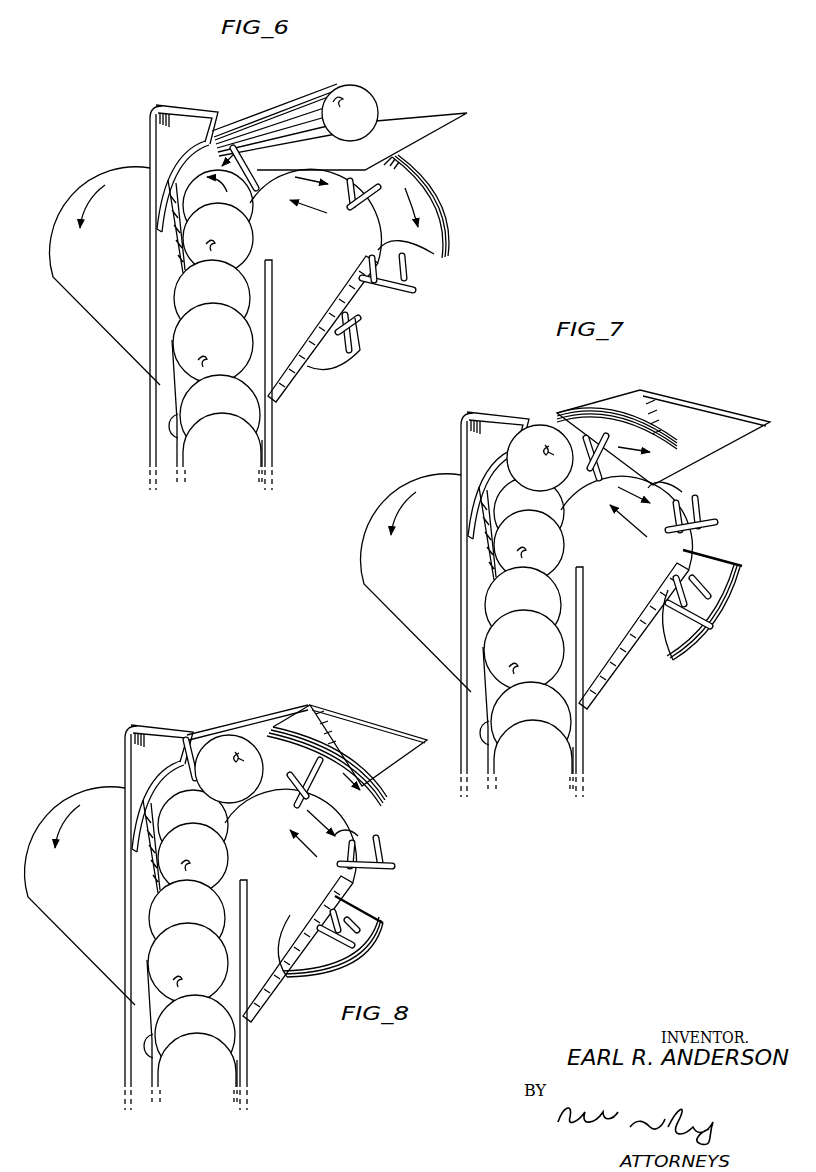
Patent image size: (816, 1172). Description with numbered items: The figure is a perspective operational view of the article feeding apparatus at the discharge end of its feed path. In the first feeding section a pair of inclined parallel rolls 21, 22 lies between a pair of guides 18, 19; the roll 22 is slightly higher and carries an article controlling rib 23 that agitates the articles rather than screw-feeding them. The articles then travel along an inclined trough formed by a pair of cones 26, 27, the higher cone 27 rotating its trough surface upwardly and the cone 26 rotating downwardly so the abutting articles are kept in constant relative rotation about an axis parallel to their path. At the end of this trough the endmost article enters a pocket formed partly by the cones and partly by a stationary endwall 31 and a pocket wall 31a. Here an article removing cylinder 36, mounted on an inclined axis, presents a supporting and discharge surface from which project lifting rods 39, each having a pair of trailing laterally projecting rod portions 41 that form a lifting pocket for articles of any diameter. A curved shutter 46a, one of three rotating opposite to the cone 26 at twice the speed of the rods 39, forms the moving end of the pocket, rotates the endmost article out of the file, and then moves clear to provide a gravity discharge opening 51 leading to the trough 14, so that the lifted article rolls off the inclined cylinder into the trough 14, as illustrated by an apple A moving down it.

In FIG. 6, the trough 14 is at (440, 126).
In FIG. 7, the trough 14 is at (722, 432).
In FIG. 8, the trough 14 is at (387, 747).
In FIG. 6, the guide 18 is at (154, 383).
In FIG. 7, the guide 18 is at (436, 605).
In FIG. 8, the guide 18 is at (106, 918).
In FIG. 6, the guide 19 is at (273, 417).
In FIG. 7, the guide 19 is at (601, 682).
In FIG. 8, the guide 19 is at (262, 995).
In FIG. 6, the roll 21 is at (264, 440).
In FIG. 7, the roll 21 is at (592, 761).
In FIG. 8, the roll 21 is at (254, 1082).
In FIG. 6, the roll 22 is at (176, 446).
In FIG. 7, the roll 22 is at (450, 719).
In FIG. 8, the roll 22 is at (116, 1032).
In FIG. 6, the article controlling rib 23 is at (172, 419).
In FIG. 7, the article controlling rib 23 is at (458, 728).
In FIG. 8, the article controlling rib 23 is at (111, 1051).
In FIG. 6, the cone 26 is at (316, 268).
In FIG. 7, the cone 26 is at (626, 592).
In FIG. 8, the cone 26 is at (290, 905).
In FIG. 6, the cone 27 is at (131, 268).
In FIG. 7, the cone 27 is at (416, 583).
In FIG. 8, the cone 27 is at (80, 896).
In FIG. 6, the endwall 31 is at (168, 104).
In FIG. 7, the endwall 31 is at (498, 415).
In FIG. 8, the endwall 31 is at (160, 728).
In FIG. 6, the pocket wall 31a is at (185, 157).
In FIG. 7, the pocket wall 31a is at (454, 483).
In FIG. 8, the pocket wall 31a is at (117, 804).
In FIG. 6, the cylinder 36 is at (413, 252).
In FIG. 7, the cylinder 36 is at (656, 490).
In FIG. 8, the cylinder 36 is at (342, 836).
In FIG. 6, the rod 39 is at (258, 172).
In FIG. 7, the rod 39 is at (712, 528).
In FIG. 8, the rod 39 is at (372, 870).
In FIG. 6, the laterally projecting rod portion 41 is at (408, 278).
In FIG. 7, the laterally projecting rod portion 41 is at (702, 506).
In FIG. 8, the laterally projecting rod portion 41 is at (384, 848).
In FIG. 6, the shutter 46a is at (226, 148).
In FIG. 7, the shutter 46a is at (718, 605).
In FIG. 8, the shutter 46a is at (368, 795).
In FIG. 8, the gravity discharge opening 51 is at (270, 724).
In FIG. 6, the apple A is at (370, 100).